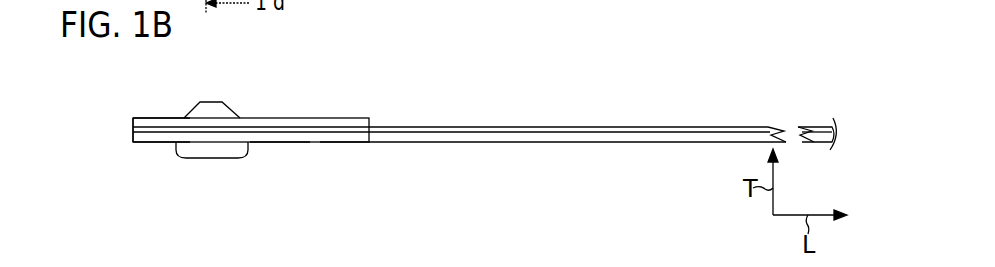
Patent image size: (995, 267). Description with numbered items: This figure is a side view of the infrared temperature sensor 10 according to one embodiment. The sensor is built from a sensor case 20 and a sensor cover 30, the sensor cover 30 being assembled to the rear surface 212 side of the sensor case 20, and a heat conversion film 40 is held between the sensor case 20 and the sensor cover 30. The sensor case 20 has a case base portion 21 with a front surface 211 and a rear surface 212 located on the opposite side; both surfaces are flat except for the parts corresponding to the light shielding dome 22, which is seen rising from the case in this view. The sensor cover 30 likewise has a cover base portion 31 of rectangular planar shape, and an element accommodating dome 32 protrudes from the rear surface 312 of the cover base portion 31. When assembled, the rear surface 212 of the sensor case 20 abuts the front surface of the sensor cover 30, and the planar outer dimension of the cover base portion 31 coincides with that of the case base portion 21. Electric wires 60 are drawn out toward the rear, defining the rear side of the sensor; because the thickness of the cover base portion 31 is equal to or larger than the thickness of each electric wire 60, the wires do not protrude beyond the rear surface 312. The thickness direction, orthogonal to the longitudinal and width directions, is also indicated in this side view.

The infrared temperature sensor 10 is at (507, 124).
The sensor case 20 is at (333, 119).
The case base portion 21 is at (270, 116).
The front surface 211 is at (148, 117).
The rear surface 212 is at (148, 144).
The light shielding dome 22 is at (216, 101).
The sensor cover 30 is at (308, 144).
The cover base portion 31 is at (282, 144).
The rear surface 312 is at (362, 144).
The element accommodating dome 32 is at (213, 159).
The heat conversion film 40 is at (132, 130).
The electric wires 60 is at (620, 126).